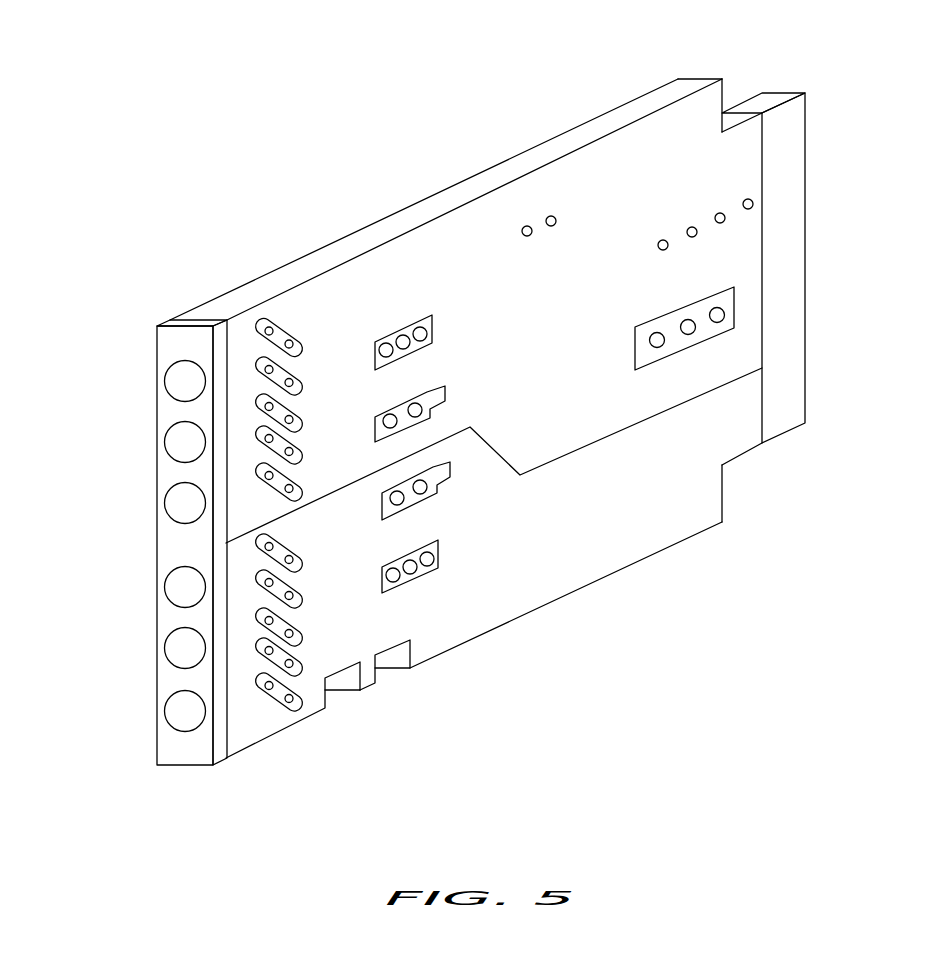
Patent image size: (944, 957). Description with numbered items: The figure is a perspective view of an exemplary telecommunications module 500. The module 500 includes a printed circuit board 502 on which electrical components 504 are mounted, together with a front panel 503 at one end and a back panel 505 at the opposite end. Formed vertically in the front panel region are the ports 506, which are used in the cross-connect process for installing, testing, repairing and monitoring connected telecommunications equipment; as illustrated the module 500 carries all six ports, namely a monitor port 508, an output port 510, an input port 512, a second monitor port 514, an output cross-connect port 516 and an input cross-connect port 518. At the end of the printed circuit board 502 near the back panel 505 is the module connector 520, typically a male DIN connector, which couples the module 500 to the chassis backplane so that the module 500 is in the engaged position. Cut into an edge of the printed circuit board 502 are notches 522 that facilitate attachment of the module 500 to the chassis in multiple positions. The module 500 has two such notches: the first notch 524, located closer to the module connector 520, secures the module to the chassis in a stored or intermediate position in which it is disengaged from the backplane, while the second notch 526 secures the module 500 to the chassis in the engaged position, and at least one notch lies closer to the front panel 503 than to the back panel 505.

The module 500 is at (222, 131).
The printed circuit board 502 is at (466, 429).
The front panel 503 is at (183, 752).
The electrical components 504 is at (465, 455).
The back panel 505 is at (786, 66).
The ports 506 is at (123, 294).
The monitor port 508 is at (136, 361).
The output port 510 is at (136, 484).
The input port 512 is at (136, 568).
The second monitor port 514 is at (136, 691).
The output cross-connect port 516 is at (136, 423).
The input cross-connect port 518 is at (136, 629).
The module connector 520 is at (783, 240).
The notches 522 is at (462, 738).
The first notch 524 is at (415, 675).
The second notch 526 is at (329, 710).